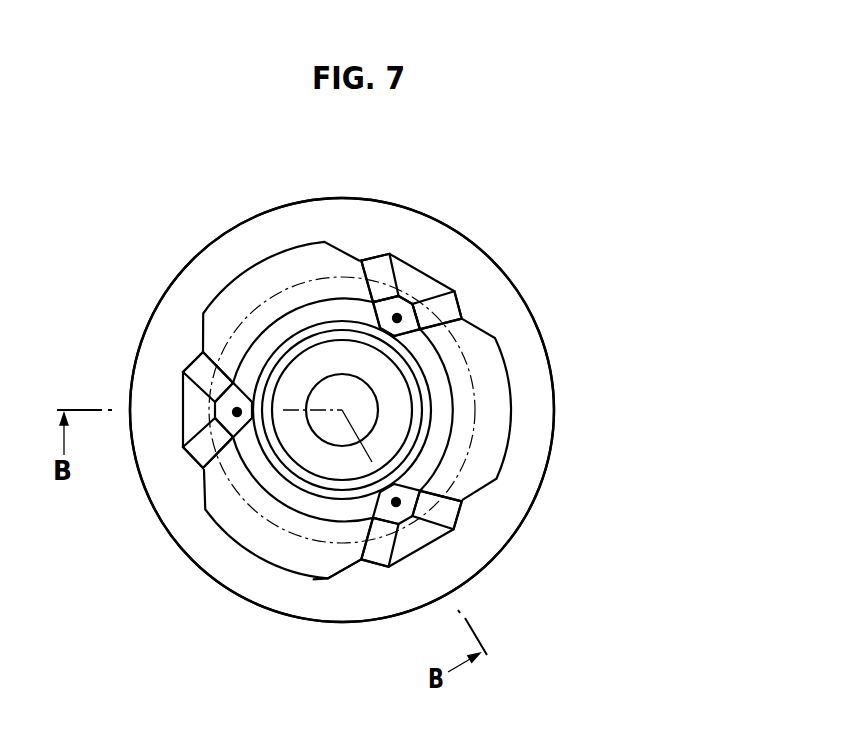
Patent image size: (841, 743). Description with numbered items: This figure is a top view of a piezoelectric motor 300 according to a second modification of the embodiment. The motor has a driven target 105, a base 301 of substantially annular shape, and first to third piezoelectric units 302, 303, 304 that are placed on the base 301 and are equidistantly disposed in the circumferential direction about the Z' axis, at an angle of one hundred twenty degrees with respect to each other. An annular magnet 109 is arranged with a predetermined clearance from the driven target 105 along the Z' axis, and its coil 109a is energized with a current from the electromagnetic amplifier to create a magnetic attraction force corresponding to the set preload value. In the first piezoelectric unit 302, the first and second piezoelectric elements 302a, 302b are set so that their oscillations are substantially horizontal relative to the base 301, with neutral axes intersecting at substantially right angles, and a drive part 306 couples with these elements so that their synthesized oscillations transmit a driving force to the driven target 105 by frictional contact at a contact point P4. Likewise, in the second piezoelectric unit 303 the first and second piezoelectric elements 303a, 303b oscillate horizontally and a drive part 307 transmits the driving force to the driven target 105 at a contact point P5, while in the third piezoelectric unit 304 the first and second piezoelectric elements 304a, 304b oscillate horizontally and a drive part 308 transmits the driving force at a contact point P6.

The piezoelectric motor 300 is at (632, 233).
The driven target 105 is at (458, 345).
The annular magnet 109 is at (350, 397).
The coil 109a is at (397, 420).
The base 301 is at (547, 467).
The first piezoelectric unit 302 is at (428, 533).
The first piezoelectric element 302a is at (463, 519).
The second piezoelectric element 302b is at (375, 567).
The second piezoelectric unit 303 is at (427, 285).
The first piezoelectric element 303a is at (372, 257).
The second piezoelectric element 303b is at (460, 302).
The third piezoelectric unit 304 is at (192, 401).
The first piezoelectric element 304a is at (187, 452).
The second piezoelectric element 304b is at (187, 367).
The drive part 306 is at (487, 480).
The drive part 307 is at (380, 303).
The drive part 308 is at (207, 500).
The contact point P4 is at (391, 505).
The contact point P5 is at (392, 318).
The contact point P6 is at (237, 406).